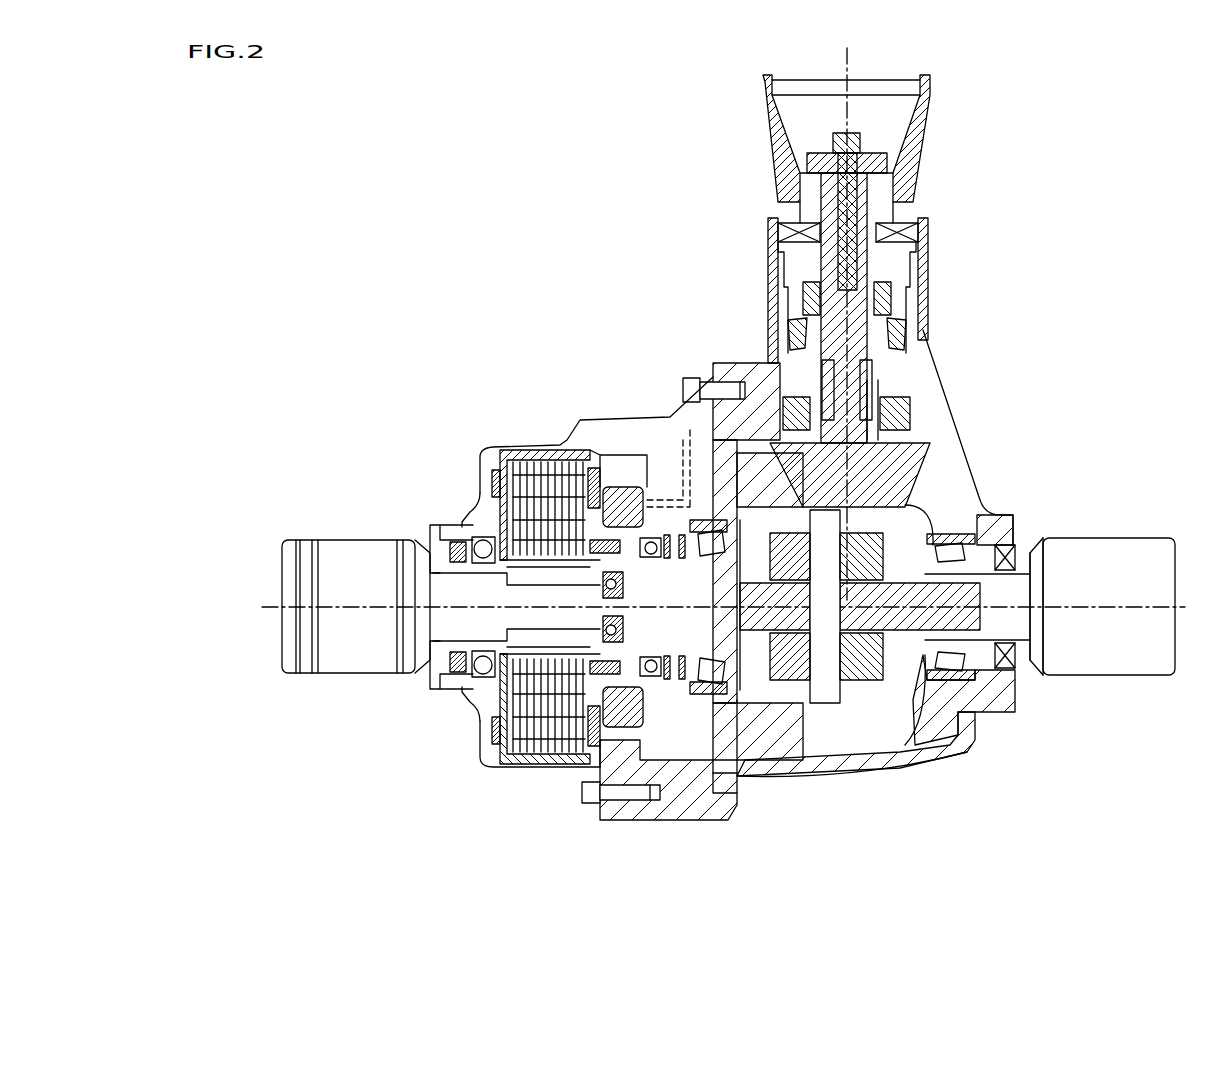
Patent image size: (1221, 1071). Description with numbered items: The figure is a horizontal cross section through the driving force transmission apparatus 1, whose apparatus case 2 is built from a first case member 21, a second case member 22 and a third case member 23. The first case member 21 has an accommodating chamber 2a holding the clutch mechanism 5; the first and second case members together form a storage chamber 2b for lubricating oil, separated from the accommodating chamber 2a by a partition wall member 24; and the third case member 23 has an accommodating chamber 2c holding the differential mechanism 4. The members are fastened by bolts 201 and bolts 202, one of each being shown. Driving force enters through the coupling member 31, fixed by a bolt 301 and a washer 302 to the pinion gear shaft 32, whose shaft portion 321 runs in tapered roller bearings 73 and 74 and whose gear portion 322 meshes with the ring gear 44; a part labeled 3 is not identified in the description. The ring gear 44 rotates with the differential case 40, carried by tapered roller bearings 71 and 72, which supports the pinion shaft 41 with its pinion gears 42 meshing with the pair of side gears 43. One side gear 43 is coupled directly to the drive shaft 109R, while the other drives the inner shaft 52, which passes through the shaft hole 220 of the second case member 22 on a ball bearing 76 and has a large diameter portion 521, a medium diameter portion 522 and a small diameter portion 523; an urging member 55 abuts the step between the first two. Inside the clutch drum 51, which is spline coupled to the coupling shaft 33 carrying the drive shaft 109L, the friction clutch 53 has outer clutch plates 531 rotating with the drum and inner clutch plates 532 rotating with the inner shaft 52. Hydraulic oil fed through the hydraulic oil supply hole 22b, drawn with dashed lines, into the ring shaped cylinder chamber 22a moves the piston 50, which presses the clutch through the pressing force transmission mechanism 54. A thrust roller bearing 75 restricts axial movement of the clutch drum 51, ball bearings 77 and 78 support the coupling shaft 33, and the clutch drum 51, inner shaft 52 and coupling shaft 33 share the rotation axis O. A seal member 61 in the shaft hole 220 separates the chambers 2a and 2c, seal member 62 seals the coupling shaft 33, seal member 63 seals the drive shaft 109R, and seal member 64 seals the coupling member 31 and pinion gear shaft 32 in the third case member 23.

The driving force transmission apparatus 1 is at (1005, 195).
The apparatus case 2 is at (731, 610).
The accommodating chamber 2a is at (498, 712).
The storage chamber 2b is at (735, 800).
The accommodating chamber 2c is at (912, 695).
The first case member 21 is at (605, 822).
The second case member 22 is at (660, 822).
The cylinder chamber 22a is at (722, 768).
The hydraulic oil supply hole 22b is at (675, 440).
The third case member 23 is at (725, 822).
The partition wall member 24 is at (612, 445).
The bolts 201 is at (588, 806).
The bolts 202 is at (703, 382).
The shaft hole 220 is at (672, 680).
The pinion gear shaft 3 is at (850, 340).
The bolt 301 is at (832, 142).
The washer 302 is at (806, 163).
The coupling member 31 is at (926, 130).
The pinion gear shaft 32 is at (1010, 358).
The shaft portion 321 is at (865, 397).
The gear portion 322 is at (878, 408).
The coupling shaft 33 is at (440, 650).
The differential mechanism 4 is at (918, 538).
The differential case 40 is at (911, 530).
The pinion shaft 41 is at (826, 690).
The pinion gears 42 is at (893, 458).
The side gears 43 is at (800, 690).
The ring gear 44 is at (787, 727).
The clutch mechanism 5 is at (604, 590).
The piston 50 is at (622, 490).
The clutch drum 51 is at (500, 458).
The inner shaft 52 is at (580, 653).
The large diameter portion 521 is at (543, 572).
The medium diameter portion 522 is at (668, 662).
The small diameter portion 523 is at (775, 606).
The friction clutch 53 is at (548, 465).
The outer clutch plates 531 is at (548, 752).
The inner clutch plates 532 is at (520, 752).
The pressing force transmission mechanism 54 is at (592, 470).
The urging member 55 is at (651, 556).
The seal member 61 is at (670, 560).
The seal member 62 is at (455, 566).
The seal member 63 is at (1015, 664).
The seal member 64 is at (908, 225).
The tapered roller bearing 71 is at (945, 537).
The tapered roller bearing 72 is at (705, 550).
The tapered roller bearing 73 is at (800, 315).
The tapered roller bearing 74 is at (795, 410).
The thrust roller bearing 75 is at (492, 480).
The ball bearing 76 is at (651, 658).
The ball bearing 77 is at (605, 624).
The ball bearing 78 is at (480, 540).
The drive shaft 109L is at (400, 540).
The drive shaft 109R is at (1115, 538).
The rotation axis O is at (1180, 605).